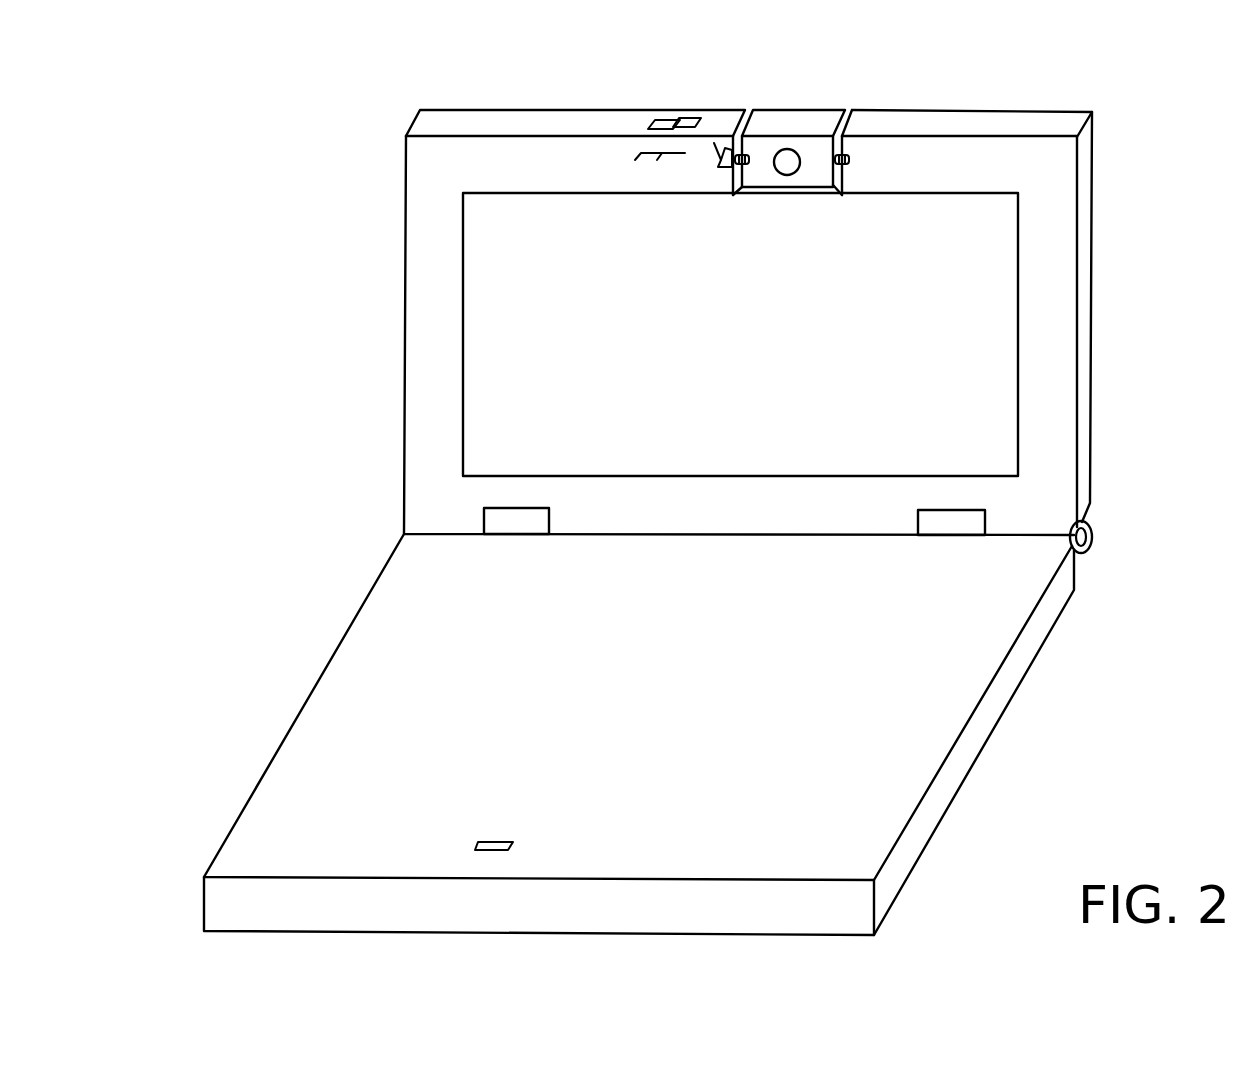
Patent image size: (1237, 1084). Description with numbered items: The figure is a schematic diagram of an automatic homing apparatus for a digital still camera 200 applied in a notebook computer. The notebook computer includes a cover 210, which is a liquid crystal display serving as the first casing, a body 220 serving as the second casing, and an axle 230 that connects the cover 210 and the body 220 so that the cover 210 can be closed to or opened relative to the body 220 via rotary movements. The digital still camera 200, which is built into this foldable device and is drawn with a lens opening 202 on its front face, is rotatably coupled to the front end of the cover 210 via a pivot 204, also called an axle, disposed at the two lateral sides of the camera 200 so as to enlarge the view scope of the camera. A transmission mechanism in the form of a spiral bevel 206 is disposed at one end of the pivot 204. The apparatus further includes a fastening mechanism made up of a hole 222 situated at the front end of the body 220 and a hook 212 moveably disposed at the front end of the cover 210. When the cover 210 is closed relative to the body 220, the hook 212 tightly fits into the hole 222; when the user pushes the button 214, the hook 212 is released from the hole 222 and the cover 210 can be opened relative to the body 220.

The digital still camera 200 is at (837, 109).
The lens 202 is at (792, 149).
The pivot 204 is at (746, 154).
The spiral bevel 206 is at (716, 118).
The cover 210 is at (1092, 309).
The hook 212 is at (637, 158).
The button 214 is at (653, 118).
The body 220 is at (1010, 702).
The hole 222 is at (470, 842).
The axle 230 is at (1092, 537).